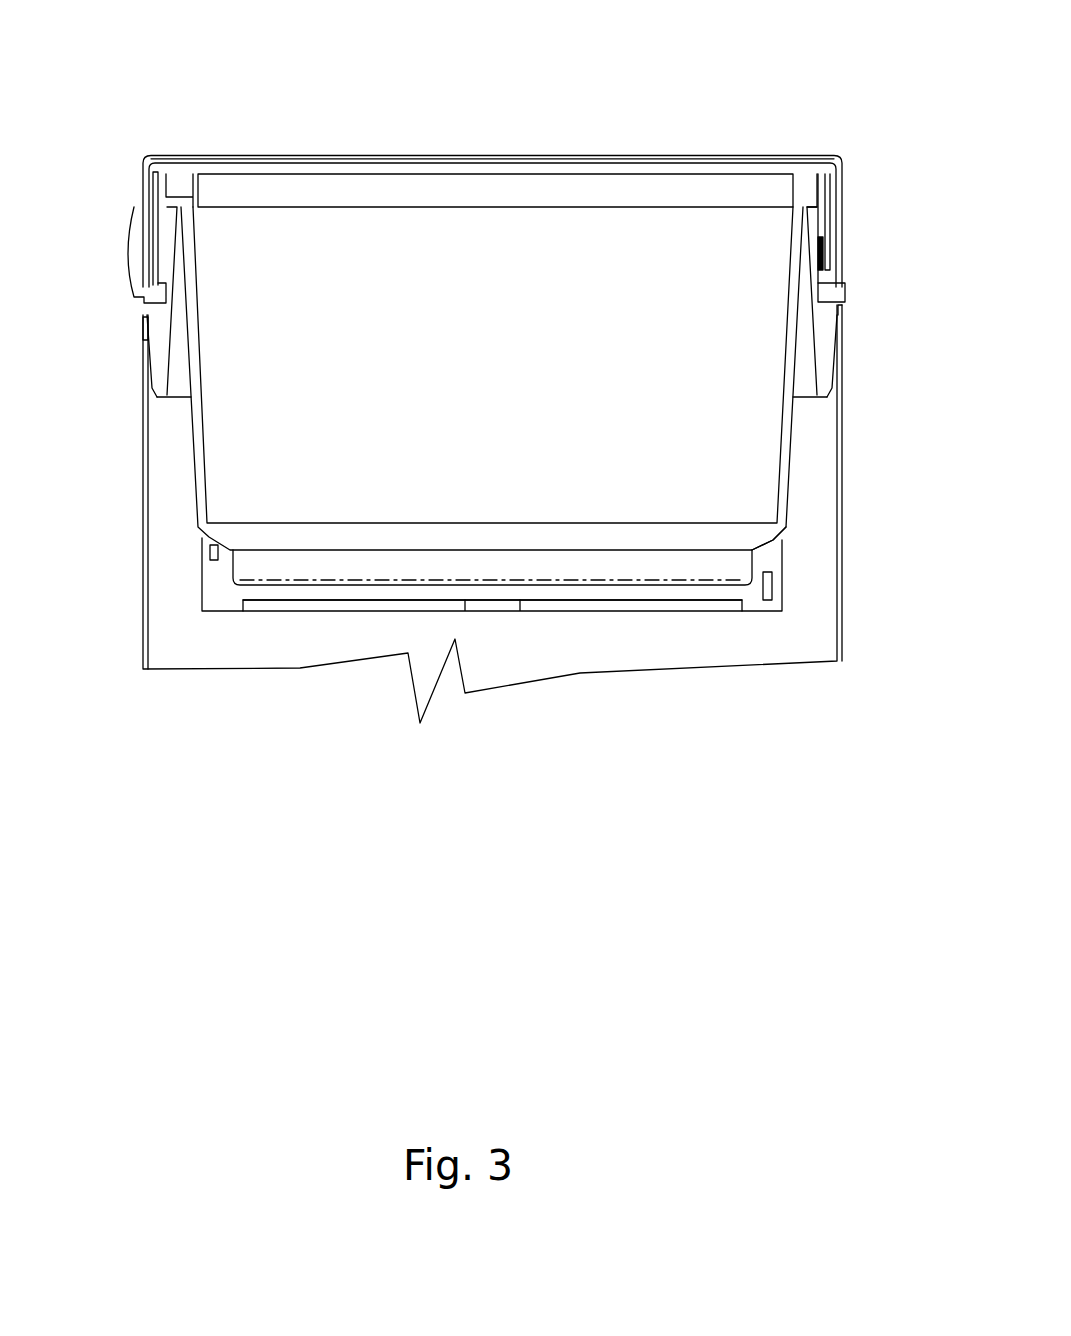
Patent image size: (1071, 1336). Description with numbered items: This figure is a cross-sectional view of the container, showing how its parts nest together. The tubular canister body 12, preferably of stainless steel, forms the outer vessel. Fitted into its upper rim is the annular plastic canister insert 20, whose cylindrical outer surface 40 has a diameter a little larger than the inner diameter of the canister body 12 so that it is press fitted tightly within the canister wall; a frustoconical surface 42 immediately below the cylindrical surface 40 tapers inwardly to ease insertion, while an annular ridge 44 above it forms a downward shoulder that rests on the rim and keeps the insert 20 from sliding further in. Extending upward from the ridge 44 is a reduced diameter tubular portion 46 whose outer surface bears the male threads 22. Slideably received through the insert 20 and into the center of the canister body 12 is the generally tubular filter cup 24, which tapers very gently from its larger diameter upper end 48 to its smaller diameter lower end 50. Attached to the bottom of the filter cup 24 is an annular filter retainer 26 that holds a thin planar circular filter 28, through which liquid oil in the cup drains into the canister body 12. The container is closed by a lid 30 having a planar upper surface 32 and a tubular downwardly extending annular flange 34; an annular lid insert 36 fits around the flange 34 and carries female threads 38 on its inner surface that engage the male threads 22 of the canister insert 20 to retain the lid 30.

The canister body 12 is at (143, 618).
The canister insert 20 is at (138, 344).
The male threads 22 is at (823, 276).
The filter cup 24 is at (173, 467).
The filter retainer 26 is at (800, 592).
The filter 28 is at (718, 602).
The lid 30 is at (299, 140).
The planar upper surface 32 is at (415, 160).
The annular flange 34 is at (144, 198).
The lid insert 36 is at (129, 195).
The female threads 38 is at (848, 291).
The cylindrical outer surface 40 is at (838, 356).
The frustoconical surface 42 is at (835, 400).
The annular ridge 44 is at (840, 308).
The reduced diameter tubular portion 46 is at (824, 268).
The upper end 48 is at (817, 242).
The lower end 50 is at (793, 532).